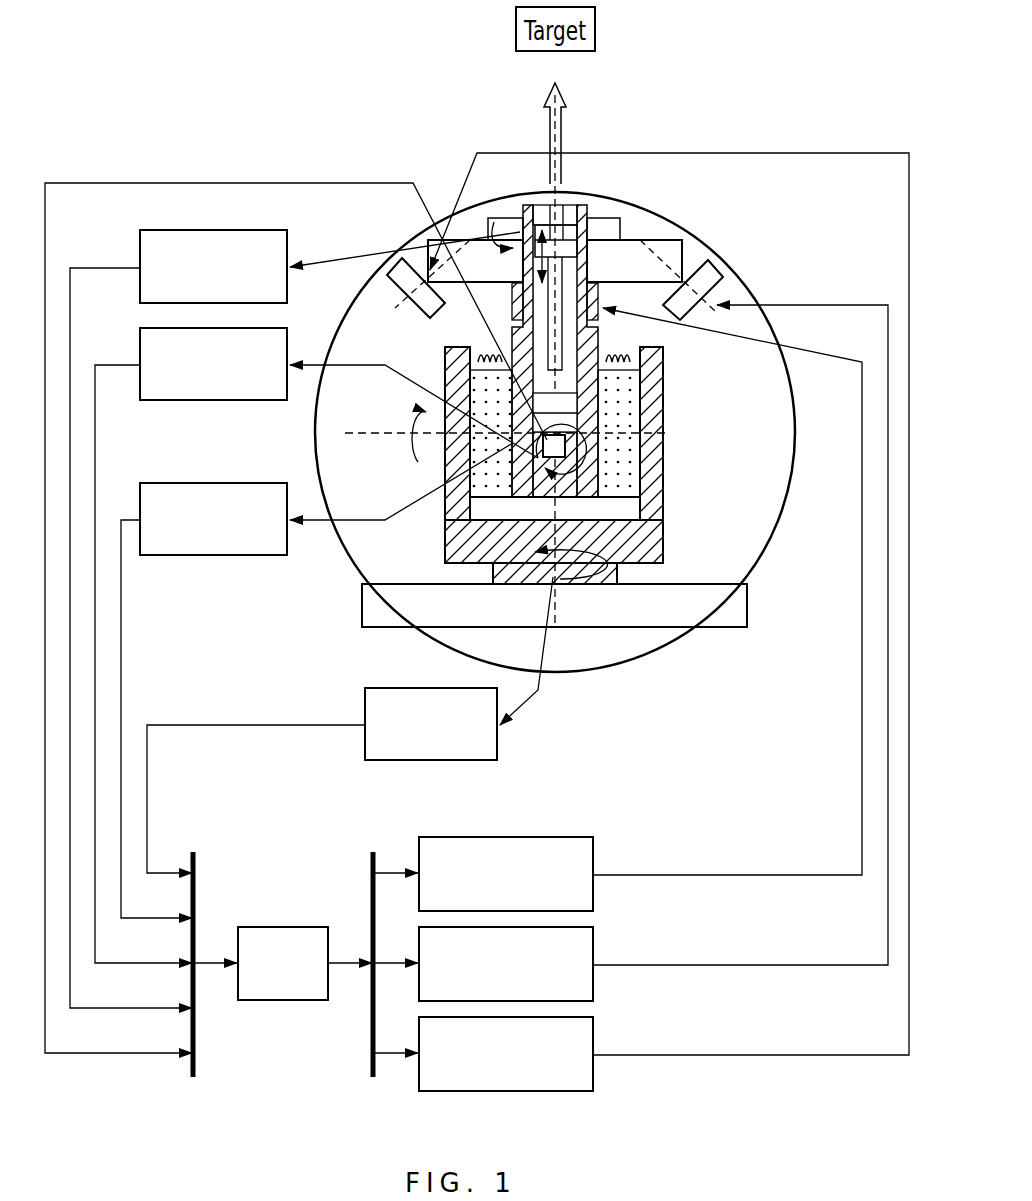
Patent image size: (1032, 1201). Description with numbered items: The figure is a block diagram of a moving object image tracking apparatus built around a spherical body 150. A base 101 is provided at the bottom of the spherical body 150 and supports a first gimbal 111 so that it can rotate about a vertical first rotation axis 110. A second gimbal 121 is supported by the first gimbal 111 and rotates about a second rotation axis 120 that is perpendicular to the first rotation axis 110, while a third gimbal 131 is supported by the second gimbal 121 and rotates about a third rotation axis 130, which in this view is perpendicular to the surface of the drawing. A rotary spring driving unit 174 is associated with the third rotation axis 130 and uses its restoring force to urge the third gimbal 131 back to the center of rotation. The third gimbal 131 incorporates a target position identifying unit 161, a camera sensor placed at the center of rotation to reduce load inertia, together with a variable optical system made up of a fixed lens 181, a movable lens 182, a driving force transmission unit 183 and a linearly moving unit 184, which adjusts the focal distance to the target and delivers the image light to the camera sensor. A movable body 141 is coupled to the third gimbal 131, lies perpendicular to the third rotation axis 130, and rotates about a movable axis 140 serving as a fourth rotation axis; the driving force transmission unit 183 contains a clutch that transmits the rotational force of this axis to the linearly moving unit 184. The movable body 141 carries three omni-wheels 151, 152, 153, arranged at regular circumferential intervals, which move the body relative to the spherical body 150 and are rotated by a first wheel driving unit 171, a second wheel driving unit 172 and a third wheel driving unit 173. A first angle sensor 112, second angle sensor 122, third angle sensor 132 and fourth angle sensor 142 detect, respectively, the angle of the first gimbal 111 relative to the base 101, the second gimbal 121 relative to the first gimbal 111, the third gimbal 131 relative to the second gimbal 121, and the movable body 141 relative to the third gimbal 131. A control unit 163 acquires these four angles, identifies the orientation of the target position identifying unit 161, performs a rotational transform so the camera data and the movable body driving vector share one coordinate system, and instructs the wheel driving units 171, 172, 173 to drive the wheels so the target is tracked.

The base 101 is at (738, 630).
The first rotation axis 110 is at (558, 610).
The first gimbal 111 is at (663, 545).
The first angle sensor 112 is at (430, 760).
The second rotation axis 120 is at (356, 428).
The second gimbal 121 is at (653, 502).
The second angle sensor 122 is at (225, 555).
The third rotation axis 130 is at (530, 462).
The third gimbal 131 is at (650, 471).
The third angle sensor 132 is at (225, 400).
The movable axis 140 is at (566, 133).
The movable body 141 is at (674, 240).
The fourth angle sensor 142 is at (215, 230).
The spherical body 150 is at (650, 222).
The omni-wheel 151 is at (600, 300).
The omni-wheel 152 is at (715, 262).
The omni-wheel 153 is at (418, 318).
The target position identifying unit 161 is at (576, 455).
The control unit 163 is at (282, 927).
The first wheel driving unit 171 is at (596, 850).
The second wheel driving unit 172 is at (596, 940).
The third wheel driving unit 173 is at (596, 1030).
The rotary spring driving unit 174 is at (494, 348).
The fixed lens 181 is at (600, 398).
The movable lens 182 is at (568, 248).
The driving force transmission unit 183 is at (540, 262).
The linearly moving unit 184 is at (547, 205).